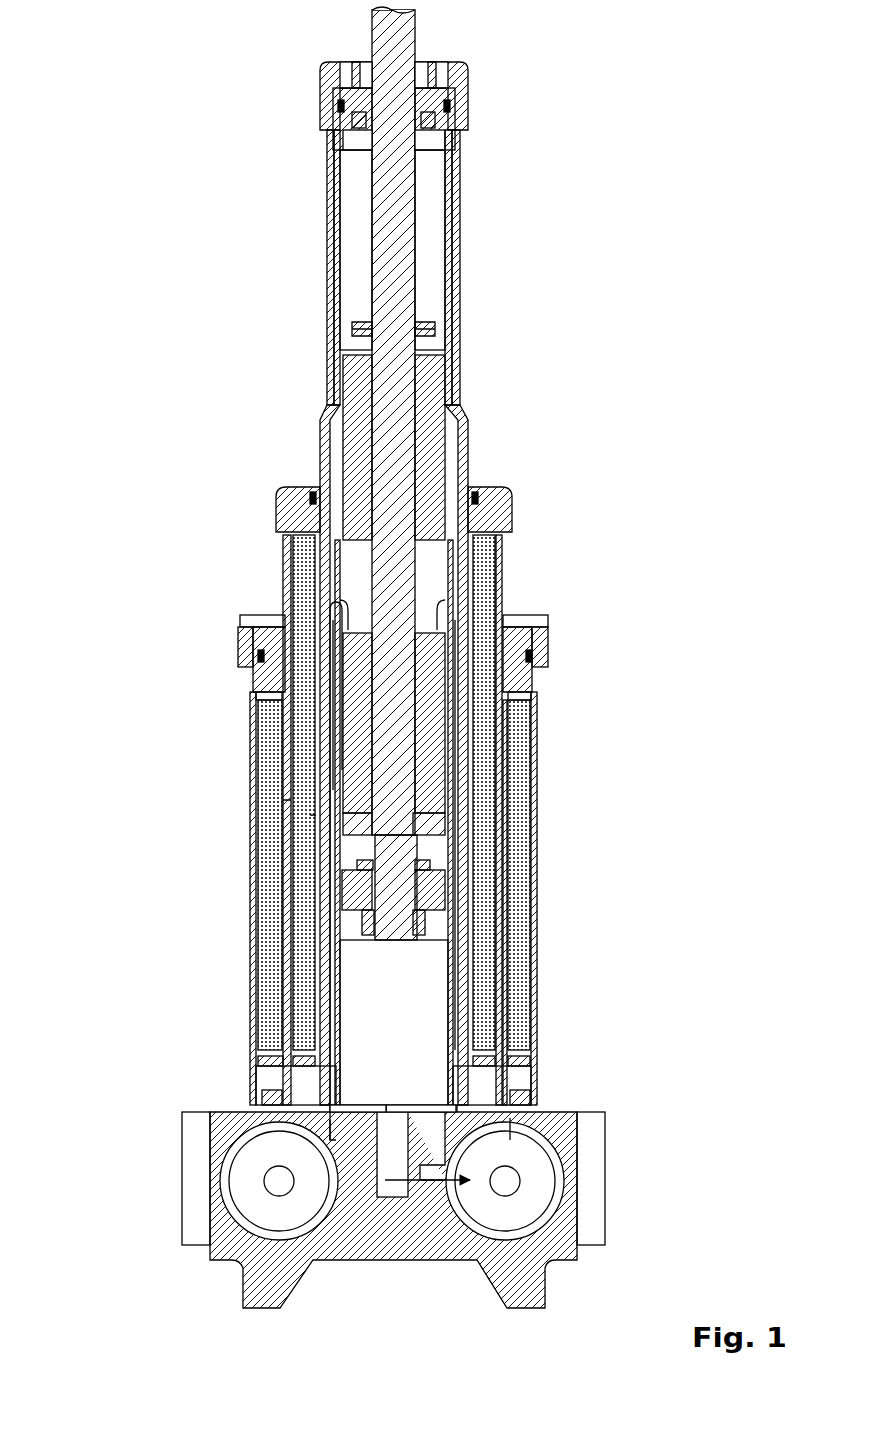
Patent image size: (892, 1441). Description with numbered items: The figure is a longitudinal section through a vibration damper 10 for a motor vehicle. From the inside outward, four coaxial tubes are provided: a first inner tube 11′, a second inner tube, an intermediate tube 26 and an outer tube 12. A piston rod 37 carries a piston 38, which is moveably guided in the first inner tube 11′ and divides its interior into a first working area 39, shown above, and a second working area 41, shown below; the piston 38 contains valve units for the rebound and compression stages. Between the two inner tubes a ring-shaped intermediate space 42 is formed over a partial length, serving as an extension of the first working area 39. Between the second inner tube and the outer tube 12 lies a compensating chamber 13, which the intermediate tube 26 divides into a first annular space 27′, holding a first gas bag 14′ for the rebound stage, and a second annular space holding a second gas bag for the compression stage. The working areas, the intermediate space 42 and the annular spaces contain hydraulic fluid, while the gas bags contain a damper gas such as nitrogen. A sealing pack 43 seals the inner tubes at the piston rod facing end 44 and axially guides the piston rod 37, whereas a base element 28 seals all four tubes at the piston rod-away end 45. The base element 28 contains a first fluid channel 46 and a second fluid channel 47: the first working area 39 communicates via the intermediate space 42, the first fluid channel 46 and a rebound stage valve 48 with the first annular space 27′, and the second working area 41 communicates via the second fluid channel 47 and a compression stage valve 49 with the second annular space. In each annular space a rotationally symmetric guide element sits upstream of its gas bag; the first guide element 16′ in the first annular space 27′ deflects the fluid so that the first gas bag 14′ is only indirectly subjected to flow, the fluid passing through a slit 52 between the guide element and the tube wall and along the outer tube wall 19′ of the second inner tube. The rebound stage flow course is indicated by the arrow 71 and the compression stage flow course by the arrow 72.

The vibration damper 10 is at (143, 107).
The first inner tube 11′ is at (450, 212).
The outer tube 12 is at (536, 850).
The compensating chamber 13 is at (273, 1090).
The first gas bag 14′ is at (487, 555).
The first guide element 16′ is at (303, 1062).
The outer tube wall of the second inner tube 19′ is at (468, 800).
The intermediate tube 26 is at (500, 580).
The first annular space 27′ is at (312, 565).
The base element 28 is at (407, 1100).
The piston rod 37 is at (400, 189).
The piston 38 is at (448, 890).
The first working area 39 is at (430, 282).
The second working area 41 is at (425, 975).
The intermediate space 42 is at (455, 447).
The sealing pack 43 is at (425, 118).
The piston rod facing end 44 is at (366, 60).
The piston rod-away end 45 is at (338, 1262).
The first fluid channel 46 is at (336, 602).
The second fluid channel 47 is at (391, 1073).
The rebound stage valve 48 is at (279, 1181).
The compression stage valve 49 is at (508, 1188).
The slit 52 is at (283, 818).
The arrow 71 is at (328, 680).
The arrow 72 is at (450, 1155).